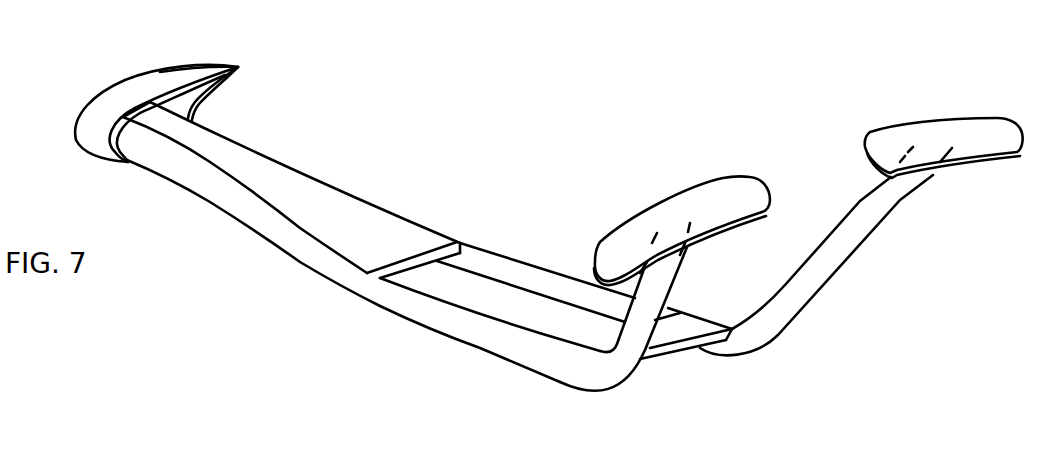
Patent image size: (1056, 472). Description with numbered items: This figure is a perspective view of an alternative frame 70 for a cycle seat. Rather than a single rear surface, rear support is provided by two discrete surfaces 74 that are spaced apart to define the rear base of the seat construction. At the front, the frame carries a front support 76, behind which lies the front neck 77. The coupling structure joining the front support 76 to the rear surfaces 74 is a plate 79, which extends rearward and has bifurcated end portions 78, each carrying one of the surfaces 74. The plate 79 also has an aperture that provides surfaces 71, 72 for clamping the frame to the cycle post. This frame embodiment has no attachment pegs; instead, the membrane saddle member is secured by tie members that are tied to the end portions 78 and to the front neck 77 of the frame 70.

The frame 70 is at (271, 225).
The clamping surface 71 is at (537, 279).
The clamping surface 72 is at (434, 316).
The rear support surface 74 is at (692, 207).
The front support 76 is at (118, 90).
The front neck 77 is at (162, 125).
The bifurcated end portion 78 is at (640, 340).
The plate 79 is at (330, 209).